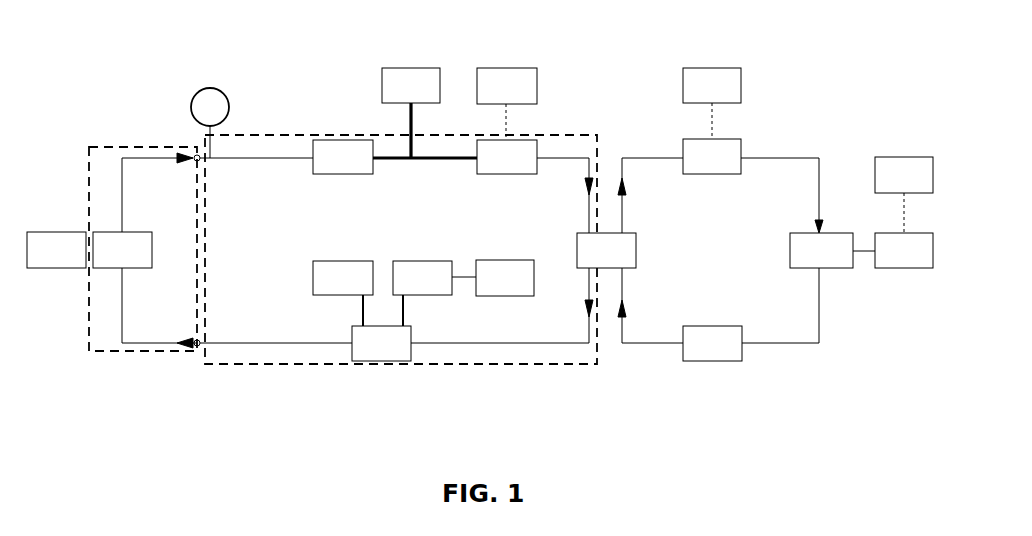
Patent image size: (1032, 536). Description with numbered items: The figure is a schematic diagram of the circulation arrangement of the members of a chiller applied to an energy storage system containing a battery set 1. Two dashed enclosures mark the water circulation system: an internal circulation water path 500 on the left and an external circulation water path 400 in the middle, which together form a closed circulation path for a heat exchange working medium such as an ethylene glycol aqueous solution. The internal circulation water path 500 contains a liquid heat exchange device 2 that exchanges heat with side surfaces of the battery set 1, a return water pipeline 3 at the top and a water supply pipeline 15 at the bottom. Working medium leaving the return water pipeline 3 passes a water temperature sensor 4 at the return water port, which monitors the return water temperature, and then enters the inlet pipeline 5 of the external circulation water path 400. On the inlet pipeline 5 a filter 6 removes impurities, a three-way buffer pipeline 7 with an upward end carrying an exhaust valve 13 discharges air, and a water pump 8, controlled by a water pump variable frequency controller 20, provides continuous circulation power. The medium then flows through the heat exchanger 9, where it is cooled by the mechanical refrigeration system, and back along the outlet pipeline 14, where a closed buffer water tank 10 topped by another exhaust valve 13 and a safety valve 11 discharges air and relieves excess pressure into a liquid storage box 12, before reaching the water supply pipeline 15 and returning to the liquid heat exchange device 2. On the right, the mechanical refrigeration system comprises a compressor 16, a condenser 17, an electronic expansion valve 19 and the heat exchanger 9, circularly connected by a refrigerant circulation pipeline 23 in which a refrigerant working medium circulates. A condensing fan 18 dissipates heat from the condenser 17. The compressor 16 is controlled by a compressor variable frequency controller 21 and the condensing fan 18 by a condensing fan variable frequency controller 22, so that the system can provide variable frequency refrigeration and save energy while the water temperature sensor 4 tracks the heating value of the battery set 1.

The battery set 1 is at (56, 250).
The liquid heat exchange device 2 is at (122, 250).
The return water pipeline 3 is at (159, 158).
The water temperature sensor 4 is at (217, 88).
The inlet pipeline 5 is at (297, 157).
The filter 6 is at (343, 157).
The buffer pipeline 7 is at (397, 160).
The water pump 8 is at (507, 157).
The heat exchanger 9 is at (606, 250).
The buffer water tank 10 is at (381, 328).
The safety valve 11 is at (422, 293).
The liquid storage box 12 is at (493, 278).
The exhaust valve 13 is at (376, 181).
The outlet pipeline 14 is at (279, 342).
The water supply pipeline 15 is at (162, 343).
The compressor 16 is at (712, 156).
The condenser 17 is at (821, 250).
The condensing fan 18 is at (893, 250).
The electronic expansion valve 19 is at (712, 343).
The water pump variable frequency controller 20 is at (507, 104).
The compressor variable frequency controller 21 is at (712, 103).
The condensing fan variable frequency controller 22 is at (904, 195).
The refrigerant circulation pipeline 23 is at (785, 158).
The external circulation water path 400 is at (565, 133).
The internal circulation water path 500 is at (97, 147).